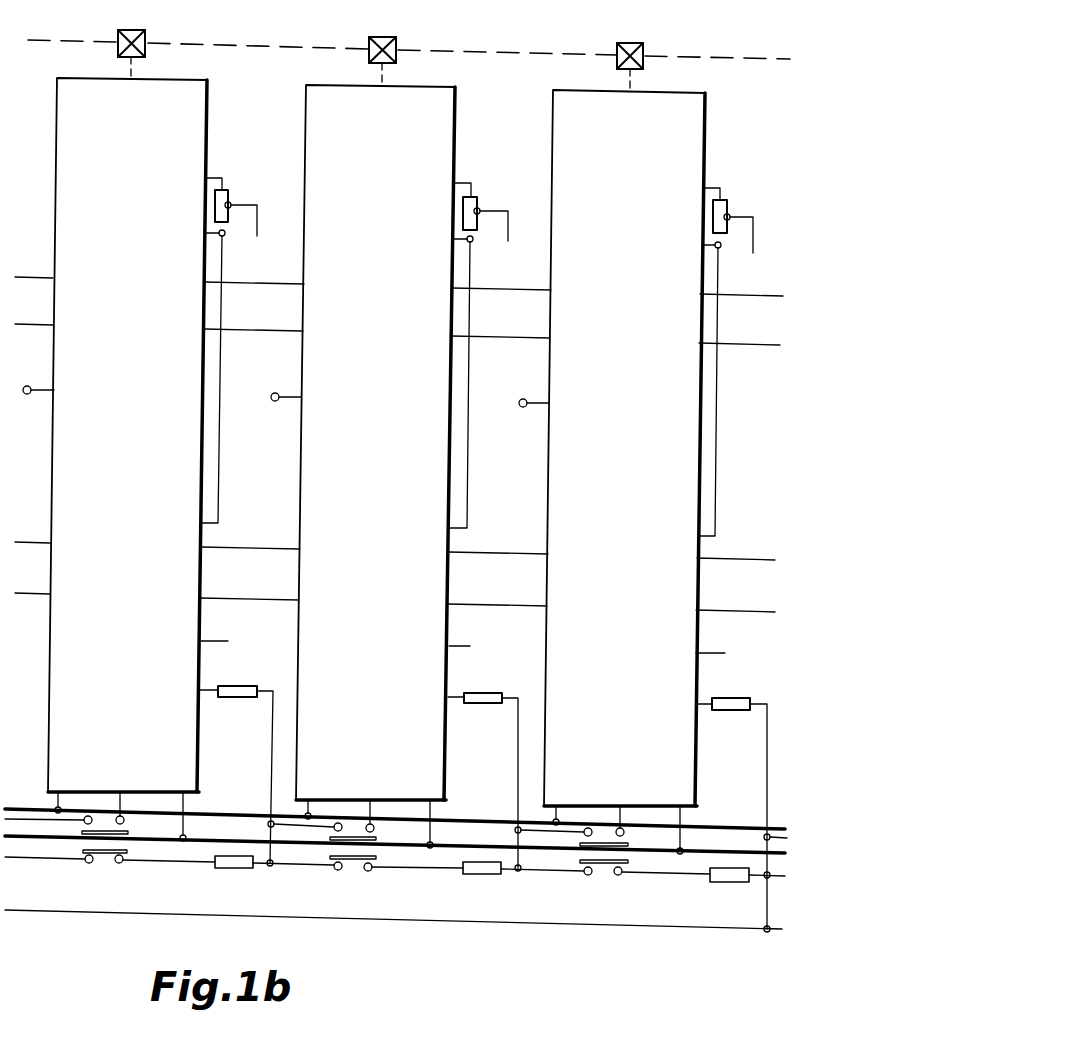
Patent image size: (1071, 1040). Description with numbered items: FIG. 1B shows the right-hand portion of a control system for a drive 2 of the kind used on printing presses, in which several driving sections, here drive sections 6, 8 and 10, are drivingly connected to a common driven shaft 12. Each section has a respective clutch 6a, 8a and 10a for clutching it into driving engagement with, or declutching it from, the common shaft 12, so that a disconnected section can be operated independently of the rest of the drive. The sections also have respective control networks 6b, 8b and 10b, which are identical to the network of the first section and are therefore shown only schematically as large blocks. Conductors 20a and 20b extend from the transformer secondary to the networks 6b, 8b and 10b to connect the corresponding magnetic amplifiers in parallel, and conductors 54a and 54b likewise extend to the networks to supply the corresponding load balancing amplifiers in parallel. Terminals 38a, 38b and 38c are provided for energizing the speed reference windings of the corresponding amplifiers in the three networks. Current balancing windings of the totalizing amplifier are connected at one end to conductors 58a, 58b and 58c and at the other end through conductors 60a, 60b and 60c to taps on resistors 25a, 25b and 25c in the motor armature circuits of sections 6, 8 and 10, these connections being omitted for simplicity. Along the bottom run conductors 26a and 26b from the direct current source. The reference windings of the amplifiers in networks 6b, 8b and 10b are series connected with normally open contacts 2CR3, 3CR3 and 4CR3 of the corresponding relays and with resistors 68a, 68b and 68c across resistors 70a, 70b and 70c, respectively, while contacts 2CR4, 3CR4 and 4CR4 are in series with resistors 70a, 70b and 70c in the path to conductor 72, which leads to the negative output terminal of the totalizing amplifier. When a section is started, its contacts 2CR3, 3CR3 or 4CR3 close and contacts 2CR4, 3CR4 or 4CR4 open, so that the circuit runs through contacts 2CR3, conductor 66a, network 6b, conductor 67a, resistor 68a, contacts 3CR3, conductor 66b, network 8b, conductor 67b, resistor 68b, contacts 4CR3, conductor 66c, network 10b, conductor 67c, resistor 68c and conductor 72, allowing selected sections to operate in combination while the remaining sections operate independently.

The drive 2 is at (44, 27).
The drive section 6 is at (92, 73).
The drive section 8 is at (346, 80).
The drive section 10 is at (591, 85).
The clutch 6a is at (145, 36).
The clutch 8a is at (396, 46).
The clutch 10a is at (643, 51).
The common driven shaft 12 is at (249, 47).
The control network 6b is at (204, 101).
The control network 8b is at (452, 108).
The control network 10b is at (702, 113).
The resistor 25a is at (227, 196).
The resistor 25b is at (476, 203).
The resistor 25c is at (727, 208).
The conductor 60a is at (257, 220).
The conductor 60b is at (508, 228).
The conductor 60c is at (753, 235).
The conductor 20a is at (30, 277).
The conductor 20b is at (30, 324).
The terminal 38a is at (24, 386).
The terminal 38b is at (272, 393).
The terminal 38c is at (520, 399).
The conductor 54a is at (30, 542).
The conductor 54b is at (30, 593).
The conductor 58a is at (217, 640).
The conductor 58b is at (462, 646).
The conductor 58c is at (715, 653).
The conductor 67a is at (206, 688).
The conductor 67b is at (454, 695).
The conductor 67c is at (703, 702).
The resistor 68a is at (250, 686).
The resistor 68b is at (494, 692).
The resistor 68c is at (744, 702).
The conductor 66a is at (122, 802).
The conductor 66b is at (372, 810).
The conductor 66c is at (622, 815).
The conductor 26a is at (215, 797).
The conductor 26b is at (215, 824).
The normally open contacts 2CR3 is at (124, 822).
The normally open contacts 3CR3 is at (374, 830).
The normally open contacts 4CR3 is at (624, 835).
The contacts 2CR4 is at (96, 861).
The contacts 3CR4 is at (361, 868).
The contacts 4CR4 is at (604, 873).
The resistor 70a is at (231, 868).
The resistor 70b is at (479, 873).
The resistor 70c is at (729, 883).
The conductor 72 is at (188, 913).